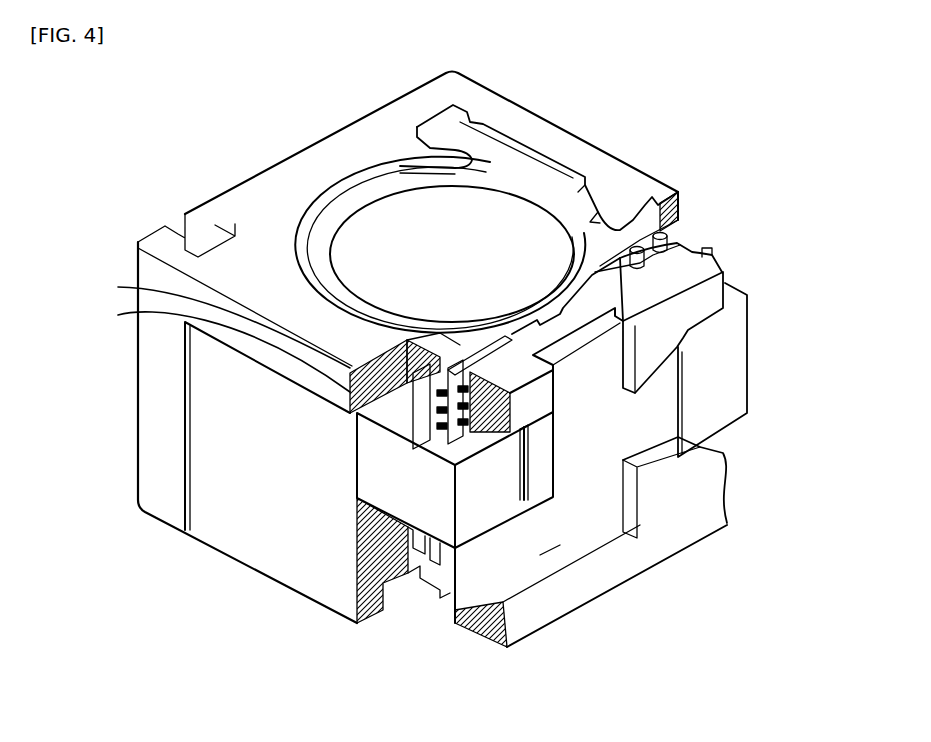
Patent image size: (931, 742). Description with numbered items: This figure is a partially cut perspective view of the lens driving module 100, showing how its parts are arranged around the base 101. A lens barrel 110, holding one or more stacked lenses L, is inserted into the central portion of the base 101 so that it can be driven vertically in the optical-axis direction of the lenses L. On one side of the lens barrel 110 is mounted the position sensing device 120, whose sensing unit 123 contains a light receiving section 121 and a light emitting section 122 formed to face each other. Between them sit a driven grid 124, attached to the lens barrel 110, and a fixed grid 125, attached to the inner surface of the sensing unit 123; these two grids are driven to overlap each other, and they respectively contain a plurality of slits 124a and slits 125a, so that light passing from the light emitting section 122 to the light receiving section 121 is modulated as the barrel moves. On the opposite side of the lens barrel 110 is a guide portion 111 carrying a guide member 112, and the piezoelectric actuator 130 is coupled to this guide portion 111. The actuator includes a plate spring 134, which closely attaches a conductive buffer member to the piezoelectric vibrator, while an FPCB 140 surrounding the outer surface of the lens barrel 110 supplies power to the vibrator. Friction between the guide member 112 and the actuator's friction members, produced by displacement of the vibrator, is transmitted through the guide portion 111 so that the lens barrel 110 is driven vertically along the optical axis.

The lens driving module 100 is at (683, 128).
The base 101 is at (372, 132).
The lens barrel 110 is at (342, 205).
The lens L is at (453, 207).
The guide portion 111 is at (665, 214).
The guide member 112 is at (665, 245).
The position sensing device 120 is at (466, 545).
The light receiving section 121 is at (397, 402).
The light emitting section 122 is at (473, 445).
The sensing unit 123 is at (217, 628).
The driven grid 124 is at (118, 315).
The slits 124a is at (118, 287).
The fixed grid 125 is at (475, 445).
The slits 125a is at (577, 523).
The piezoelectric actuator 130 is at (757, 337).
The plate spring 134 is at (738, 375).
The FPCB 140 is at (613, 543).